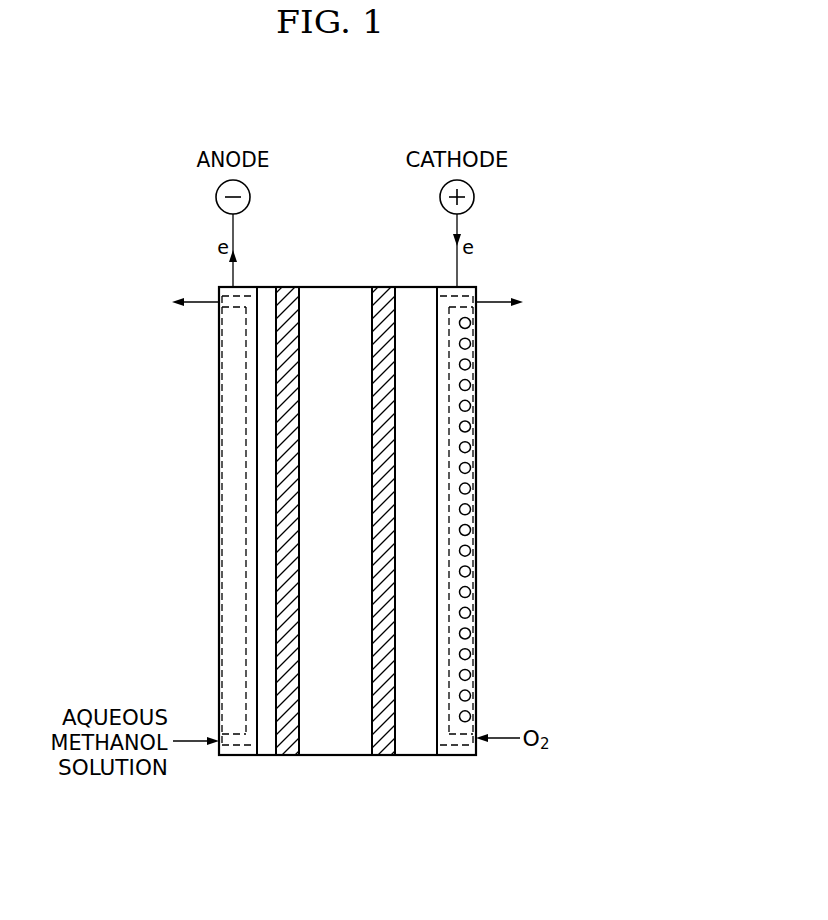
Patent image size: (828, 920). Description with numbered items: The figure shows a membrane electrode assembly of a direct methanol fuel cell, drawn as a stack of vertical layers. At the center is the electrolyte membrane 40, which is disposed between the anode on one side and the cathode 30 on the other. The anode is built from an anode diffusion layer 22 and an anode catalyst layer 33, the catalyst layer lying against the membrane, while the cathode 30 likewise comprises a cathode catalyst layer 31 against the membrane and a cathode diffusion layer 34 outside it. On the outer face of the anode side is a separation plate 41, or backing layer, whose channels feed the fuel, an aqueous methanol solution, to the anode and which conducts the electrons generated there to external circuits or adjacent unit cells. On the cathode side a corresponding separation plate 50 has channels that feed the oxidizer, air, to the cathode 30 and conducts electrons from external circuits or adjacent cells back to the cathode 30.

The cathode 30 is at (335, 530).
The cathode catalyst layer 31 is at (383, 755).
The anode catalyst layer 33 is at (288, 755).
The electrolyte membrane 40 is at (338, 755).
The anode diffusion layer 22 is at (265, 457).
The cathode diffusion layer 34 is at (413, 457).
The separation plate 41 is at (225, 522).
The separation plate 50 is at (468, 522).